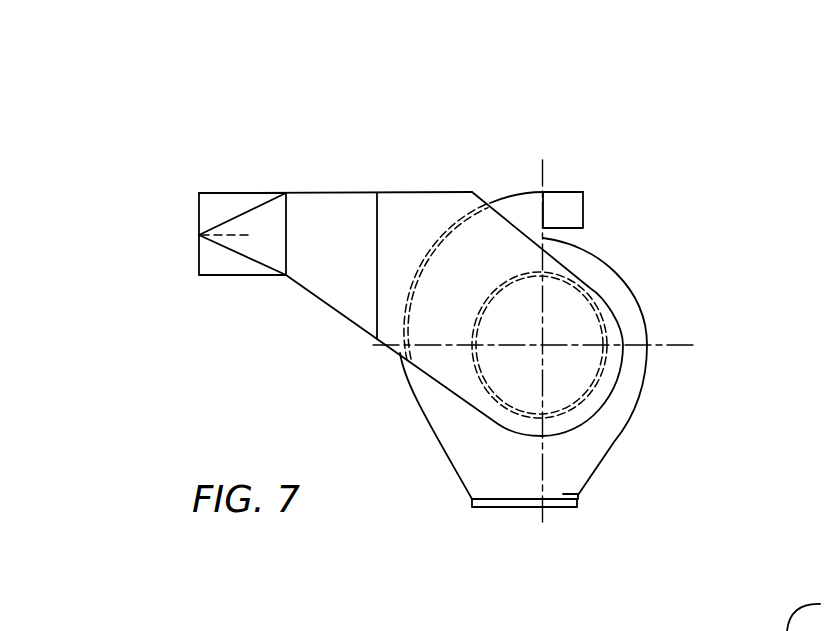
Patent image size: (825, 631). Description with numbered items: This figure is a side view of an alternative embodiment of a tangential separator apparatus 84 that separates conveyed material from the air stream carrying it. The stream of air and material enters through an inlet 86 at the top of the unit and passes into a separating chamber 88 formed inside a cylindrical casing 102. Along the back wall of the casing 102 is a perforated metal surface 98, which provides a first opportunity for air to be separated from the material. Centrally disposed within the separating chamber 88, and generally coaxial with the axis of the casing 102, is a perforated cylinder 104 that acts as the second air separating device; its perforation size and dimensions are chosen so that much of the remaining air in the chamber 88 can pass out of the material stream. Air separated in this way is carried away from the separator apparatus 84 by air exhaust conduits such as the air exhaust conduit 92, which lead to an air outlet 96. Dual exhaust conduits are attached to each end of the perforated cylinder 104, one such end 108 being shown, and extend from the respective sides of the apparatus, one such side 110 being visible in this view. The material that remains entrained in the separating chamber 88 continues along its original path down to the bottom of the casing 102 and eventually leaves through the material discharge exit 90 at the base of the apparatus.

The separator apparatus 84 is at (657, 94).
The inlet 86 is at (583, 207).
The separating chamber 88 is at (471, 294).
The material discharge exit 90 is at (484, 508).
The air exhaust conduit 92 is at (443, 210).
The air outlet 96 is at (199, 235).
The perforated metal surface 98 is at (438, 236).
The cylindrical casing 102 is at (465, 443).
The perforated cylinder 104 is at (587, 403).
The end of the perforated cylinder 108 is at (720, 630).
The side of the separator apparatus 110 is at (578, 495).